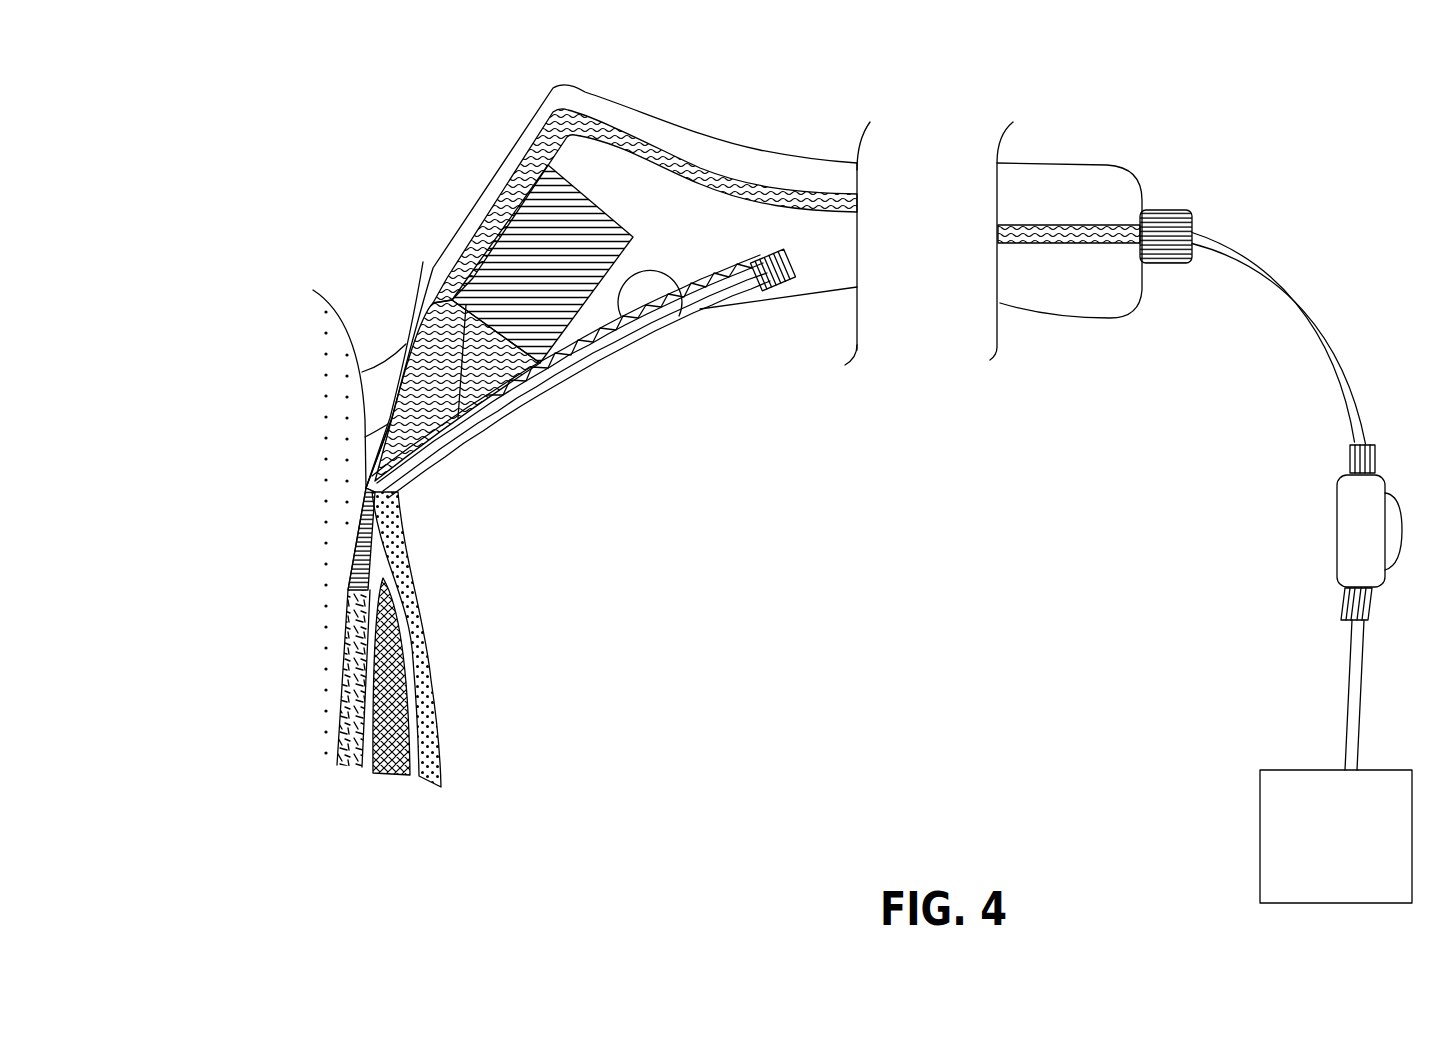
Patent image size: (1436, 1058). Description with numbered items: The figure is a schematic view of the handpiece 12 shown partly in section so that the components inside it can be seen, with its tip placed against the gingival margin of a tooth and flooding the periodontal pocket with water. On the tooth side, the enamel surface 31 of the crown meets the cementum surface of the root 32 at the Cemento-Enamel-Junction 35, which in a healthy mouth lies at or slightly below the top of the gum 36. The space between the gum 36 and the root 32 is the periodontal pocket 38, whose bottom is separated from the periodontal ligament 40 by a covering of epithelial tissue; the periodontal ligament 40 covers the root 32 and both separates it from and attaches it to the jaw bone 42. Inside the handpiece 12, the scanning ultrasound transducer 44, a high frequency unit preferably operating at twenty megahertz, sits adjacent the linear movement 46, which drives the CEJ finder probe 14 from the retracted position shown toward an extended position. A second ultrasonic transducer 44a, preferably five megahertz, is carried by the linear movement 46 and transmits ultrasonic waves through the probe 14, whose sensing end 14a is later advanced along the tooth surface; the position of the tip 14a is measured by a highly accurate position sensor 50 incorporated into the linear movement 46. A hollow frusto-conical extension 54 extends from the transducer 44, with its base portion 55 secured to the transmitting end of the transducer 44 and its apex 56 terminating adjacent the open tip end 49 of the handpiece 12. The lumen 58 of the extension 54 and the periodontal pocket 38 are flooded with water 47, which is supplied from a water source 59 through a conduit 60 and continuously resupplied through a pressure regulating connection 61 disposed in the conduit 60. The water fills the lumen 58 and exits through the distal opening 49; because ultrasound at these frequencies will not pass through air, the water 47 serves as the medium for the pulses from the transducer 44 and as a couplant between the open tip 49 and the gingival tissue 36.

The handpiece 12 is at (788, 153).
The CEJ finder probe 14 is at (587, 360).
The sensing end of CEJ sensor probe 14a is at (505, 398).
The enamel surface 31 is at (427, 300).
The root of tooth 32 is at (325, 728).
The Cemento-Enamel-Junction 35 is at (364, 487).
The gum 36 is at (407, 580).
The periodontal pocket 38 is at (357, 540).
The periodontal ligament 40 is at (350, 677).
The jaw bone 42 is at (410, 703).
The scanning ultrasound transducer 44 is at (573, 210).
The ultrasonic transducer 44a is at (757, 277).
The linear movement 46 is at (680, 320).
The water 47 is at (425, 418).
The open tip end of handpiece 49 is at (363, 492).
The position sensor 50 is at (657, 270).
The hollow frusto-conical extension 54 is at (407, 460).
The base portion 55 is at (446, 388).
The apex 56 is at (392, 486).
The lumen 58 is at (437, 393).
The water source 59 is at (1258, 817).
The conduit 60 is at (540, 137).
The pressure regulating connection 61 is at (1335, 510).